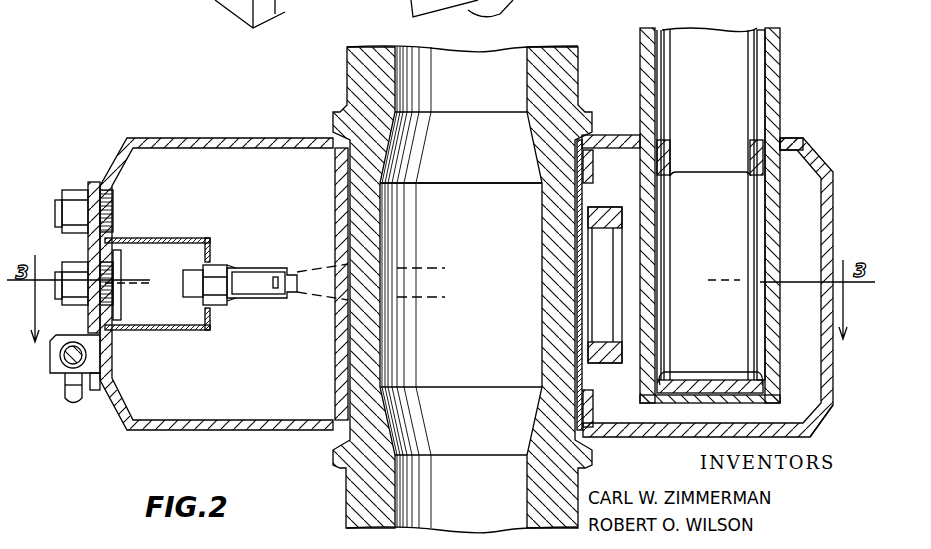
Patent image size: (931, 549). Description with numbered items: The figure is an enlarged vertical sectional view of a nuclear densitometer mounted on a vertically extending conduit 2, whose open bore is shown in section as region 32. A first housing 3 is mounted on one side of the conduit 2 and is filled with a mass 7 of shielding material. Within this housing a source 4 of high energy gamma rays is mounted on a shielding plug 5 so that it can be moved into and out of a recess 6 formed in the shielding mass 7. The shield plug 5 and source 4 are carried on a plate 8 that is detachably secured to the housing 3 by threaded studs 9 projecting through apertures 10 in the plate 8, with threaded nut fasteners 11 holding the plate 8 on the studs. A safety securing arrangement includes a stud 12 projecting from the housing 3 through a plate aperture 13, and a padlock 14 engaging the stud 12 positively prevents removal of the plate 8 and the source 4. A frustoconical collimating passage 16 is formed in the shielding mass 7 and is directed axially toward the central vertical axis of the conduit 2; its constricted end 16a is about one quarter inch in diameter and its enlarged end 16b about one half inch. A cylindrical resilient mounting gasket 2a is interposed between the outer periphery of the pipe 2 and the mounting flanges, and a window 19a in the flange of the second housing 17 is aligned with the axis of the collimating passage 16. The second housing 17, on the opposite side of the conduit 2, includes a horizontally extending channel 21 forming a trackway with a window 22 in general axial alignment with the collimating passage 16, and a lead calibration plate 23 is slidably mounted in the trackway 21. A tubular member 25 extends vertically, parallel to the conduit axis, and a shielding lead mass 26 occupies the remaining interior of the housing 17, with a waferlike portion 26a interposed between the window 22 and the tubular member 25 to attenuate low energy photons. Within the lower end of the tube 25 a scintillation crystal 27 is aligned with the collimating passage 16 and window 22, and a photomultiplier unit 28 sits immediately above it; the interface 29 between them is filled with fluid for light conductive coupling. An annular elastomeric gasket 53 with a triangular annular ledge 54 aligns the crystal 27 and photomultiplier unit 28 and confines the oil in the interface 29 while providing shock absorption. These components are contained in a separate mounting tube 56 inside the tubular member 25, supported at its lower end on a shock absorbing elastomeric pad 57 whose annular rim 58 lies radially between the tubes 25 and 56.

The conduit 2 is at (385, 128).
The resilient mounting gasket 2a is at (347, 217).
The first housing 3 is at (167, 138).
The source 4 is at (233, 288).
The shielding plug 5 is at (163, 317).
The recess 6 is at (160, 238).
The mass of shielding material 7 is at (210, 193).
The plate 8 is at (97, 182).
The threaded studs 9 is at (55, 210).
The apertures 10 is at (108, 195).
The threaded nut fasteners 11 is at (72, 191).
The stud 12 is at (53, 373).
The plate aperture 13 is at (97, 390).
The padlock 14 is at (70, 377).
The frustoconical collimating passage 16 is at (317, 290).
The constricted end 16a is at (297, 295).
The enlarged end 16b is at (348, 270).
The second housing 17 is at (793, 135).
The window 19a is at (590, 383).
The channel 21 is at (593, 357).
The window 22 is at (613, 303).
The calibration plate 23 is at (588, 225).
The tubular member 25 is at (778, 47).
The shielding lead mass 26 is at (807, 200).
The waferlike shielding portion 26a is at (631, 216).
The scintillation crystal 27 is at (720, 264).
The photomultiplier unit 28 is at (695, 84).
The interface 29 is at (718, 176).
The pipe bore 32 is at (450, 223).
The annular elastomeric gasket 53 is at (673, 158).
The annular ledge 54 is at (673, 172).
The mounting tube 56 is at (765, 33).
The shock absorbing elastomeric pad 57 is at (685, 395).
The annular rim 58 is at (777, 382).